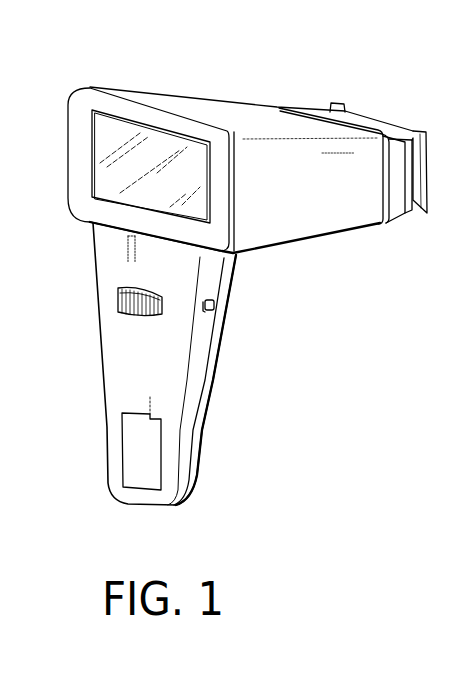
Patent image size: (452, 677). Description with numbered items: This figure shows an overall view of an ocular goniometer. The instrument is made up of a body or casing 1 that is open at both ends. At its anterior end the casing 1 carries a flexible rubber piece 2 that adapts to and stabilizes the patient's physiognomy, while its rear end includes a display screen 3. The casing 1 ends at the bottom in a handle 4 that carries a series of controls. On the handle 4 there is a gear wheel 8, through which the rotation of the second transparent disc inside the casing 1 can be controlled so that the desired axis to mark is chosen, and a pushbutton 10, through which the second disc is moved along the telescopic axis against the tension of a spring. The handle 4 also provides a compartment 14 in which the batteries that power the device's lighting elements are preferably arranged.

The body or casing 1 is at (252, 118).
The flexible rubber piece 2 is at (362, 118).
The display screen 3 is at (115, 135).
The handle 4 is at (118, 248).
The gear wheel 8 is at (120, 310).
The pushbutton 10 is at (215, 313).
The compartment 14 is at (150, 443).